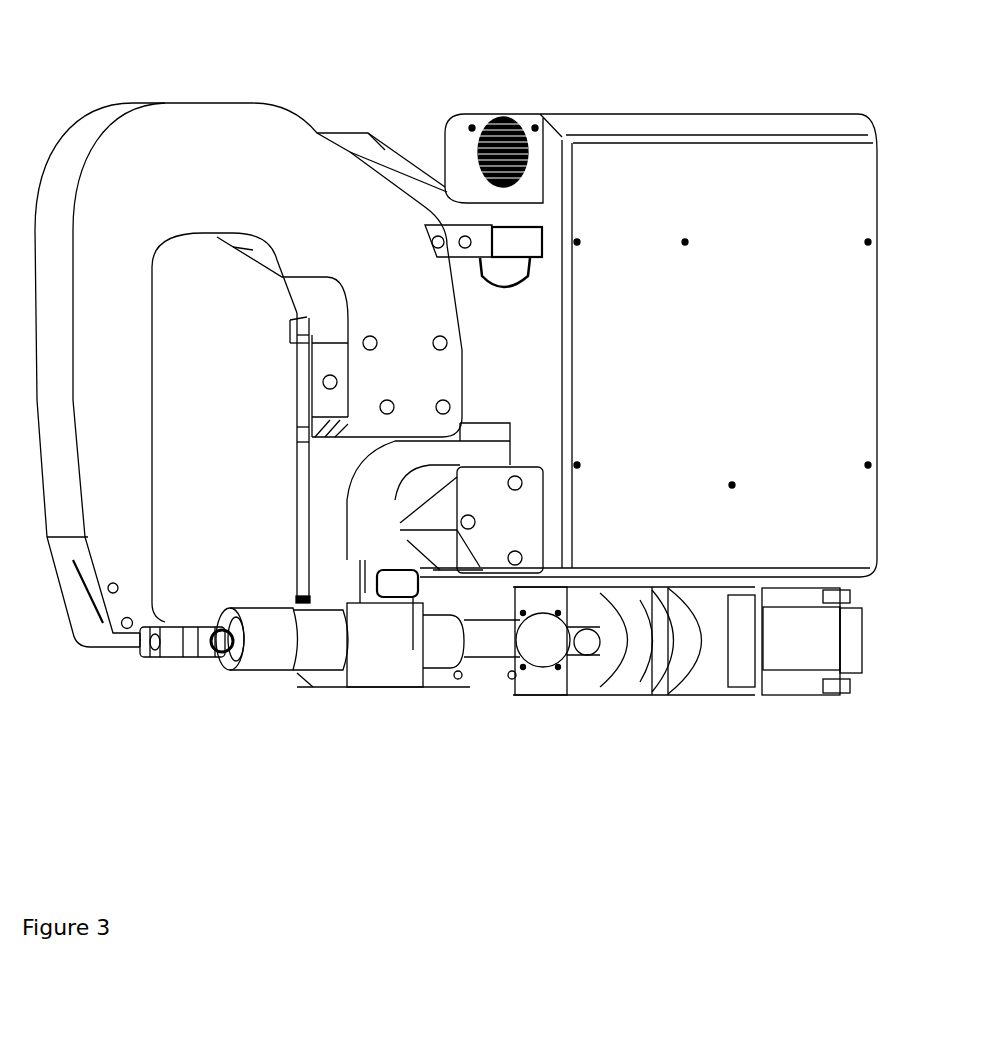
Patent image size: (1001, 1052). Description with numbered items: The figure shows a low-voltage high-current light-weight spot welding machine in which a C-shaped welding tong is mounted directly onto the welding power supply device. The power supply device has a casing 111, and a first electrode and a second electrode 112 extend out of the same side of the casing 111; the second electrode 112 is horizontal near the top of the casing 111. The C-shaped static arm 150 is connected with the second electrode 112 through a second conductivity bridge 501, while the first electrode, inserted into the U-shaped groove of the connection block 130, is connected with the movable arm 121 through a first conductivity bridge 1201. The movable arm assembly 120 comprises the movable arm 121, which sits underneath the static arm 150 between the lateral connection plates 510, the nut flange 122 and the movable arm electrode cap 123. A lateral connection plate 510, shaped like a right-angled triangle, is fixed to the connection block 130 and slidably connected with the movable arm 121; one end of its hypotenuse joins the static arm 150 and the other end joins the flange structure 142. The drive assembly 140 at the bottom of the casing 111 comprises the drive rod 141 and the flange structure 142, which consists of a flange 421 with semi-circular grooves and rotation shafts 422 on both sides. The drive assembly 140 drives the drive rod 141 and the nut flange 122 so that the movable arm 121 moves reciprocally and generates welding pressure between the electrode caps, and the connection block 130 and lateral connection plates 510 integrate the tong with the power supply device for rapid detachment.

The static arm 150 is at (185, 123).
The second conductivity bridge 501 is at (397, 152).
The second electrode 112 is at (513, 243).
The casing 111 is at (817, 130).
The lateral connection plate 510 is at (300, 467).
The first conductivity bridge 1201 is at (375, 514).
The connection block 130 is at (495, 533).
The movable arm assembly 120 is at (305, 713).
The movable arm 121 is at (300, 648).
The nut flange 122 is at (409, 660).
The movable arm electrode cap 123 is at (208, 652).
The drive assembly 140 is at (658, 731).
The drive rod 141 is at (522, 638).
The flange structure 142 is at (714, 703).
The flange 421 is at (630, 647).
The rotation shaft 422 is at (593, 657).